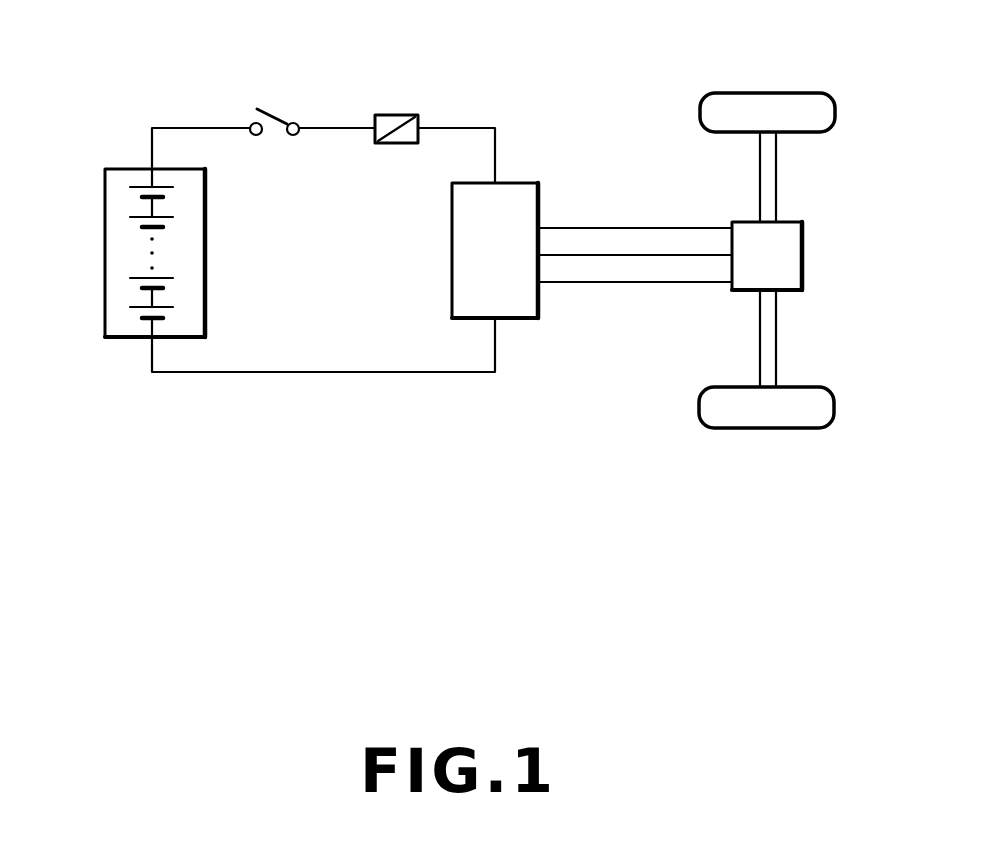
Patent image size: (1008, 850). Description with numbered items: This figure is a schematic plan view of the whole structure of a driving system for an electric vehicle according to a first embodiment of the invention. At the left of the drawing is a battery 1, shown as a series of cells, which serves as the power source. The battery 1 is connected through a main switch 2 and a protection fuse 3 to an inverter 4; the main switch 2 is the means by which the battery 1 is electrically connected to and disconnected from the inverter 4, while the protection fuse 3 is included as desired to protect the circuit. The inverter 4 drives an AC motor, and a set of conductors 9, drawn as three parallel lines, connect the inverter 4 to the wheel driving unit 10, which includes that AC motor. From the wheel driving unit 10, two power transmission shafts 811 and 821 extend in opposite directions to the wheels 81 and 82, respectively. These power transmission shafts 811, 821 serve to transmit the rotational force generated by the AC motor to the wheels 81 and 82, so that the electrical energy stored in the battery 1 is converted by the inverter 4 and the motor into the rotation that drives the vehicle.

The battery 1 is at (105, 254).
The main switch 2 is at (277, 108).
The protection fuse 3 is at (390, 113).
The inverter 4 is at (520, 180).
The conductors 9 is at (615, 227).
The wheel driving unit 10 is at (803, 265).
The wheel 81 is at (768, 92).
The power transmission shaft 811 is at (777, 186).
The wheel 82 is at (775, 430).
The power transmission shaft 821 is at (777, 342).